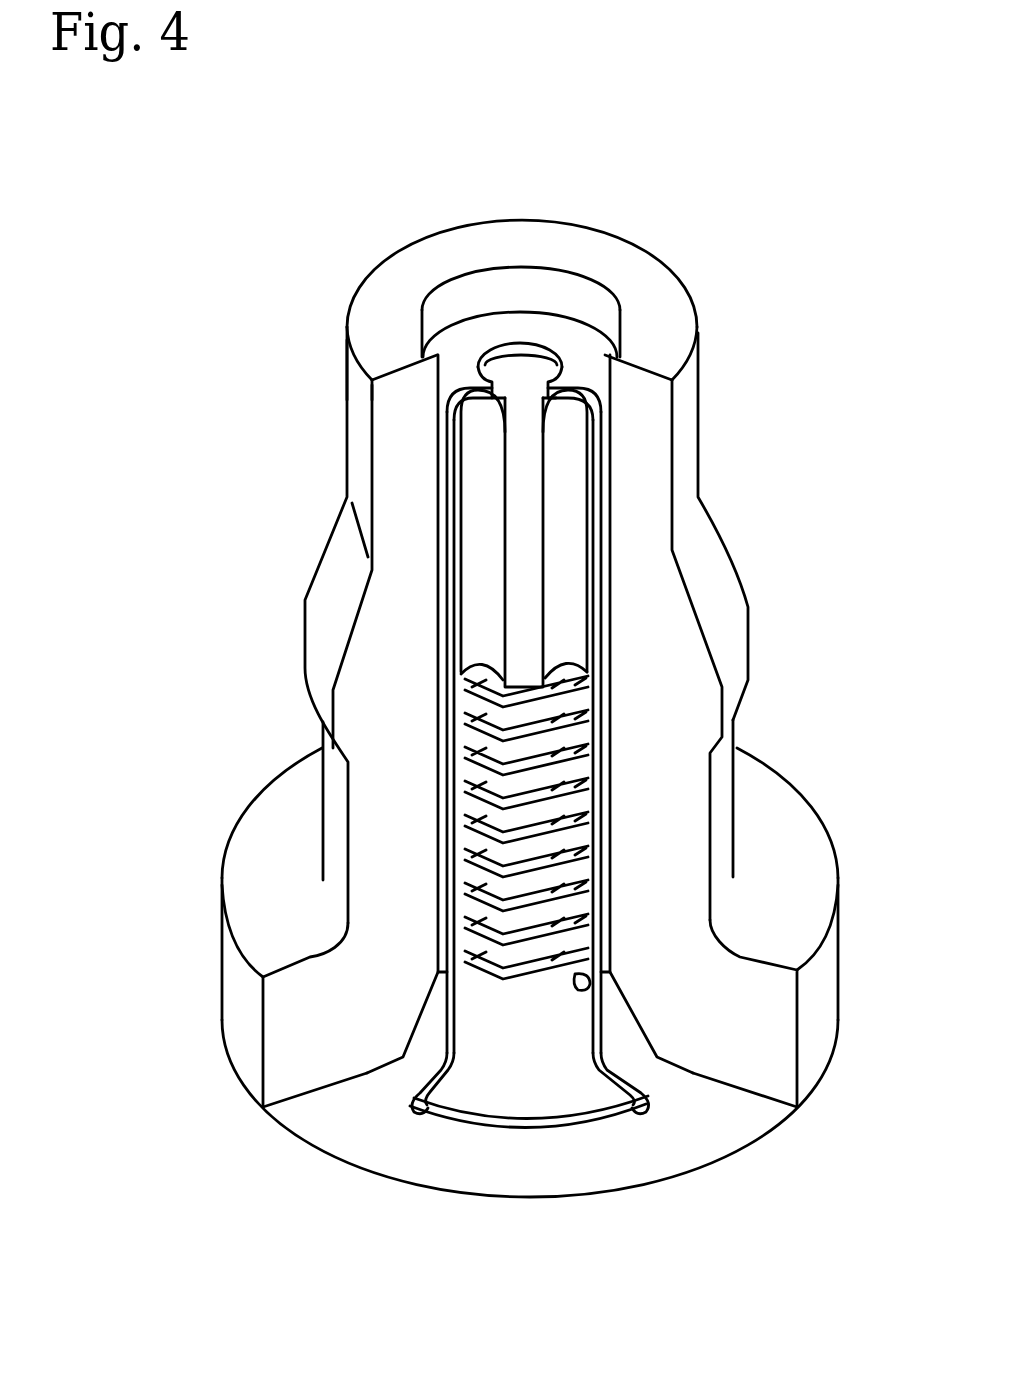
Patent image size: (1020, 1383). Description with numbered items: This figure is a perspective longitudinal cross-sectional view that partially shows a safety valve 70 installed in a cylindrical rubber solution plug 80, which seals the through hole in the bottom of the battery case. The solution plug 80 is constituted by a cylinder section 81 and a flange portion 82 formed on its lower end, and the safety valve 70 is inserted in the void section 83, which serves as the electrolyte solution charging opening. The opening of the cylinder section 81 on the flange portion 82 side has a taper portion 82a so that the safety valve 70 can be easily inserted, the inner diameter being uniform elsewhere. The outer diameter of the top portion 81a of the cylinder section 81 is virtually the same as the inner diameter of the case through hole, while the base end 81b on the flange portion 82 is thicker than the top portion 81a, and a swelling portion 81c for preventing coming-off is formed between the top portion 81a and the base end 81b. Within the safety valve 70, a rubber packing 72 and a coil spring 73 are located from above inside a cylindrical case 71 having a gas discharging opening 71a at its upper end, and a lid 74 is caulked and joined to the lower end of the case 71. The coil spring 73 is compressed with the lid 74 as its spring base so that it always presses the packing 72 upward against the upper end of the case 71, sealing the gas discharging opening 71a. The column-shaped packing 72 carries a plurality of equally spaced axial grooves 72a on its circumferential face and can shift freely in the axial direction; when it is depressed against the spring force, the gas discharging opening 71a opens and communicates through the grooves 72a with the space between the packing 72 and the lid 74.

The safety valve 70 is at (490, 1088).
The cylindrical case 71 is at (573, 342).
The gas discharging opening 71a is at (520, 346).
The rubber packing 72 is at (525, 601).
The groove 72a is at (562, 541).
The coil spring 73 is at (544, 986).
The lid 74 is at (573, 1124).
The solution plug 80 is at (419, 278).
The cylinder section 81 is at (700, 461).
The top portion 81a is at (352, 404).
The base end 81b is at (333, 788).
The swelling portion 81c is at (322, 620).
The flange portion 82 is at (222, 987).
The taper portion 82a is at (612, 1055).
The void section 83 is at (468, 302).